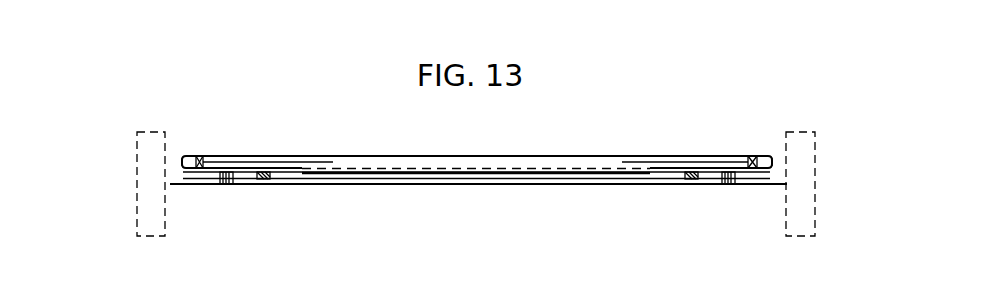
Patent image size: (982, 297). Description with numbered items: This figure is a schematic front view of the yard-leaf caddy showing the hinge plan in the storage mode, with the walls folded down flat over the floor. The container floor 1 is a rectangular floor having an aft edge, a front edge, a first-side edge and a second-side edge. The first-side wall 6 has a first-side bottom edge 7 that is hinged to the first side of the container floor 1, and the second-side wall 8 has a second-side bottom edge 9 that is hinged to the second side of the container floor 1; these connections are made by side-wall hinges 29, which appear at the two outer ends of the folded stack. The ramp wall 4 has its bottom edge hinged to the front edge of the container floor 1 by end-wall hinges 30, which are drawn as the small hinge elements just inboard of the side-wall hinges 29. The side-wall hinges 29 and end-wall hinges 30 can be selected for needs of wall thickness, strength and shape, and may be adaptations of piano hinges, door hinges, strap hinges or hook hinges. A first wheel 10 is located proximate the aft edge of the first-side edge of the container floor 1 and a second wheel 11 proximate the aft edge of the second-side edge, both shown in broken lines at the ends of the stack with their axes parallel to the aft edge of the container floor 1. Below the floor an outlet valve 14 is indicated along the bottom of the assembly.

The container floor 1 is at (288, 184).
The ramp wall 4 is at (604, 156).
The first-side wall 6 is at (275, 162).
The first-side bottom edge 7 is at (182, 156).
The second-side wall 8 is at (664, 162).
The second-side bottom edge 9 is at (772, 157).
The first wheel 10 is at (138, 185).
The second wheel 11 is at (815, 193).
The outlet valve 14 is at (456, 184).
The side-wall hinge 29 is at (182, 168).
The end-wall hinge 30 is at (200, 156).